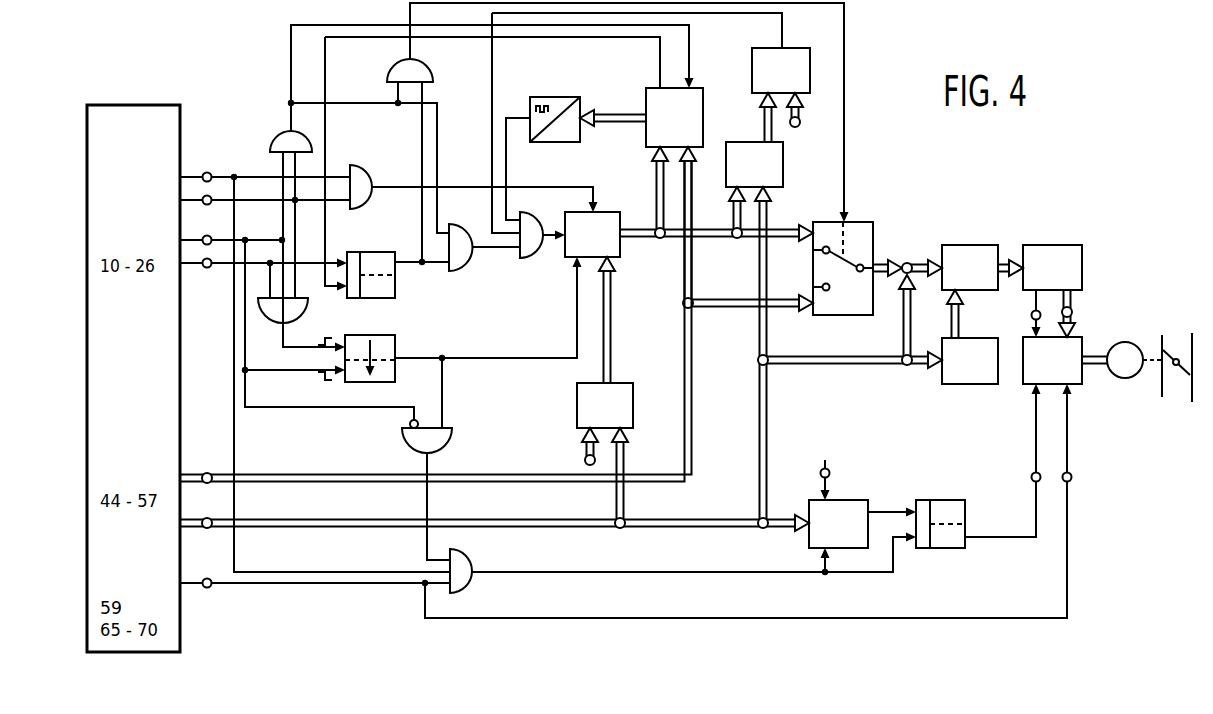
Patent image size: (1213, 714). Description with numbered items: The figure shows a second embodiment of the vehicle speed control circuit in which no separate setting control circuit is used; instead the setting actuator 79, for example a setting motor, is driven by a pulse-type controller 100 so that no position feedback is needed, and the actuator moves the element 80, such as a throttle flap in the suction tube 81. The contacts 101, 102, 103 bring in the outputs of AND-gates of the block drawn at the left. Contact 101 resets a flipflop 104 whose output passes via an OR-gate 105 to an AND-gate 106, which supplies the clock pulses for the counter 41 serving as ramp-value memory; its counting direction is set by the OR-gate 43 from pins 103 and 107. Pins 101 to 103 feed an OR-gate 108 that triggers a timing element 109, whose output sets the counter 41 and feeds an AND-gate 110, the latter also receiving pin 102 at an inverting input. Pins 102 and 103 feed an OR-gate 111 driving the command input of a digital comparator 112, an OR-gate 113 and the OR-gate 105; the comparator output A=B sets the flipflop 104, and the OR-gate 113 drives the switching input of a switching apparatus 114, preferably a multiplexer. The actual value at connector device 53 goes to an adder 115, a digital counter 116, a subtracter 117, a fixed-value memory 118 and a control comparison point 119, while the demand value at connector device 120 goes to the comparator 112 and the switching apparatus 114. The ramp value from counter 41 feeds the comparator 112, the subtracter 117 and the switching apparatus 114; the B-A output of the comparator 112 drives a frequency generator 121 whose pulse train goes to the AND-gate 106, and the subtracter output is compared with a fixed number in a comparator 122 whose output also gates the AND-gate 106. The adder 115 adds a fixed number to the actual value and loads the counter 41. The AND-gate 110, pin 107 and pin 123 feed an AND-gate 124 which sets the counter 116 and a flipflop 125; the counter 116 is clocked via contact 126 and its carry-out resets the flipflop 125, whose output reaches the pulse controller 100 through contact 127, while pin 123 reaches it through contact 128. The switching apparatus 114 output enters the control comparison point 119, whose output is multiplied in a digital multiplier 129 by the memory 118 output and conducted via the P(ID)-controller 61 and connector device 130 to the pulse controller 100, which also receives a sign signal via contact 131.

The counter 41 is at (610, 212).
The OR-gate 43 is at (358, 172).
The connector device 53 is at (206, 529).
The P(ID)-controller 61 is at (1045, 252).
The setting actuator 79 is at (1125, 342).
The element 80 is at (1170, 346).
The suction tube 81 is at (1162, 396).
The pulse-type controller 100 is at (1068, 378).
The contact 101 is at (208, 268).
The pin 102 is at (213, 236).
The pin 103 is at (208, 205).
The flipflop 104 is at (397, 290).
The OR-gate 105 is at (460, 260).
The AND-gate 106 is at (530, 250).
The pin 107 is at (208, 171).
The OR-gate 108 is at (300, 312).
The timing element 109 is at (395, 345).
The AND-gate 110 is at (447, 447).
The OR-gate 111 is at (283, 133).
The digital comparator 112 is at (700, 121).
The OR-gate 113 is at (430, 68).
The switching apparatus 114 is at (855, 228).
The adder 115 is at (583, 405).
The digital counter 116 is at (838, 508).
The subtracter 117 is at (780, 160).
The fixed-value memory (ROM) 118 is at (978, 383).
The control comparison point 119 is at (907, 263).
The connector device 120 is at (205, 473).
The frequency generator 121 is at (556, 100).
The comparator 122 is at (756, 68).
The pin 123 is at (208, 590).
The AND-gate 124 is at (468, 566).
The flipflop 125 is at (937, 514).
The contact 126 is at (819, 474).
The contact 127 is at (1032, 474).
The contact 128 is at (1071, 474).
The digital multiplier 129 is at (962, 252).
The connector device 130 is at (1072, 312).
The contact 131 is at (1032, 315).